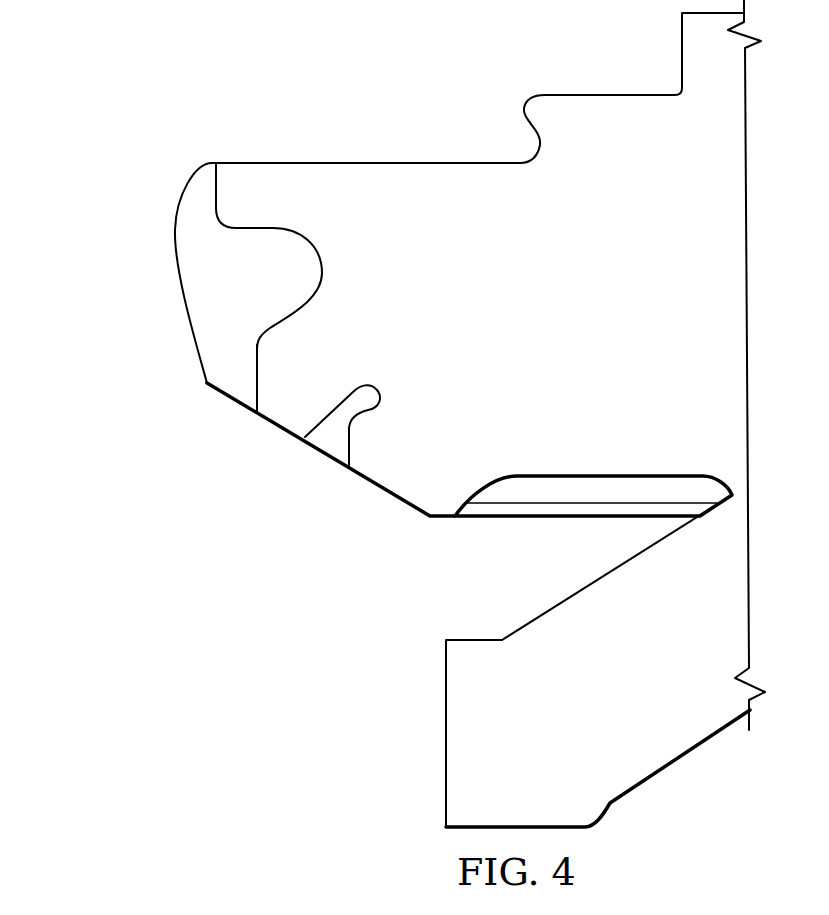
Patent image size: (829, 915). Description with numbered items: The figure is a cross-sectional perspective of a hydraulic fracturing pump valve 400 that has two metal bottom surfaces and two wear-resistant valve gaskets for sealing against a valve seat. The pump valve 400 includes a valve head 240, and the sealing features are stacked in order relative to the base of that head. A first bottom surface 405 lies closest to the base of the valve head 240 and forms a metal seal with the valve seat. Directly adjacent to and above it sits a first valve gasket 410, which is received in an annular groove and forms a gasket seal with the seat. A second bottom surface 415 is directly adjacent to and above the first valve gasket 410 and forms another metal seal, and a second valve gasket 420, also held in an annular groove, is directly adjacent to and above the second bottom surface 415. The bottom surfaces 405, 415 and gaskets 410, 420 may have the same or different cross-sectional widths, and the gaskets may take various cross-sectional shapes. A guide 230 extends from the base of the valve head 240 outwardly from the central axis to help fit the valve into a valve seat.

The pump valve 400 is at (131, 173).
The valve head 240 is at (403, 173).
The second valve gasket 420 is at (200, 279).
The second bottom surface 415 is at (259, 430).
The first valve gasket 410 is at (328, 439).
The first bottom surface 405 is at (394, 510).
The guide 230 is at (460, 747).